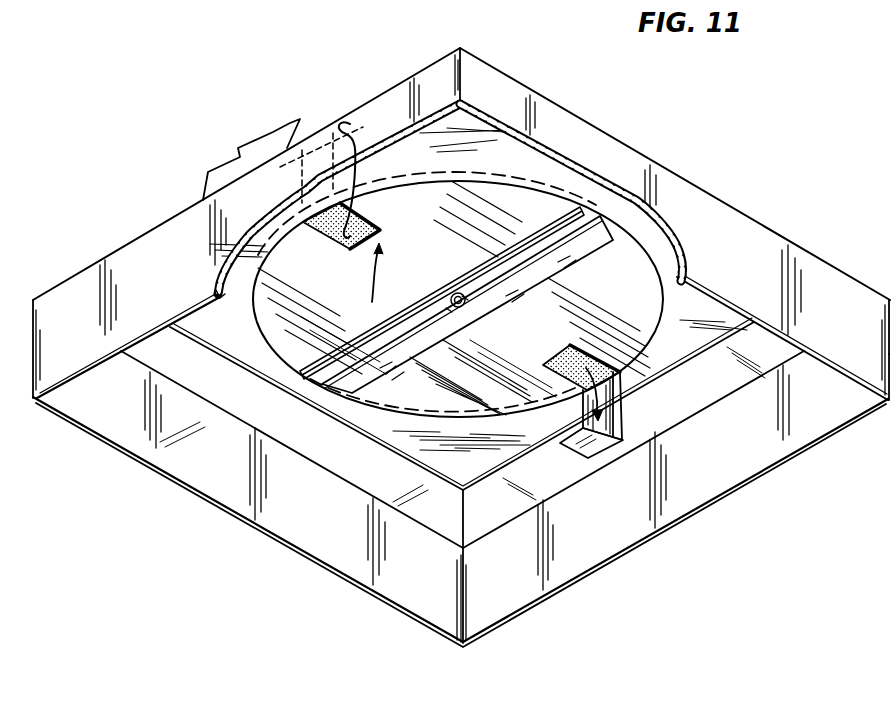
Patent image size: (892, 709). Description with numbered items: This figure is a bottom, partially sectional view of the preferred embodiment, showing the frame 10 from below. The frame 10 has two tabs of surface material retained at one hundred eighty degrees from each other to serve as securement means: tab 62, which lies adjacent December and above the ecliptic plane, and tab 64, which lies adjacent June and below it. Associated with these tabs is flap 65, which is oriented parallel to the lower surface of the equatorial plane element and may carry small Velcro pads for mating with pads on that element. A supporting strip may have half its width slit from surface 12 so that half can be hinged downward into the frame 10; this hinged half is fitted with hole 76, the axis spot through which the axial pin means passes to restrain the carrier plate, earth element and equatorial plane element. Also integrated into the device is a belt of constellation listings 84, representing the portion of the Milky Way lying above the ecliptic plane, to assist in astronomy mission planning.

The frame 10 is at (114, 426).
The surface 12 is at (752, 216).
The tab 62 is at (622, 412).
The tab 64 is at (449, 201).
The flap 65 is at (360, 124).
The hole 76 is at (465, 306).
The belt of constellation listings 84 is at (292, 122).